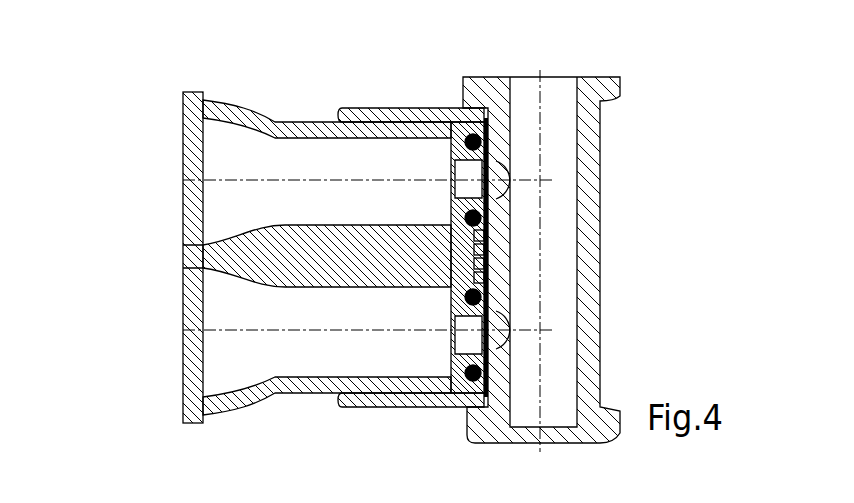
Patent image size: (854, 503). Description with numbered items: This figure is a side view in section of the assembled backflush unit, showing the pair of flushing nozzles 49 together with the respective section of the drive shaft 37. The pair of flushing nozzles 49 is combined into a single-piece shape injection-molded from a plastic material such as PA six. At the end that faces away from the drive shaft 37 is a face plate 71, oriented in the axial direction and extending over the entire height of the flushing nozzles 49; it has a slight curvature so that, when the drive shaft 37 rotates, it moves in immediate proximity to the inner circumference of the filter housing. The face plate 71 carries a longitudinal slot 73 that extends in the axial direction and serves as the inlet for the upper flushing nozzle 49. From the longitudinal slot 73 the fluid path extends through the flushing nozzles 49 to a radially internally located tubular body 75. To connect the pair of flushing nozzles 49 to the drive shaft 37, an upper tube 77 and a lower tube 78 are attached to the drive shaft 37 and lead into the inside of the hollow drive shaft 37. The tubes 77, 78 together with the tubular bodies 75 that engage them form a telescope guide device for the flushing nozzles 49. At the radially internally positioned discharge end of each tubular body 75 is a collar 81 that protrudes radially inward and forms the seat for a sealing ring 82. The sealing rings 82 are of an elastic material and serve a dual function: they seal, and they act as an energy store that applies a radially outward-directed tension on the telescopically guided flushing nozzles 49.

The drive shaft 37 is at (600, 247).
The flushing nozzles 49 is at (294, 120).
The face plate 71 is at (184, 357).
The longitudinal slot 73 is at (260, 247).
The tubular body 75 is at (397, 122).
The upper tube 77 is at (411, 239).
The lower tube 78 is at (403, 394).
The collar 81 is at (450, 197).
The sealing ring 82 is at (480, 78).